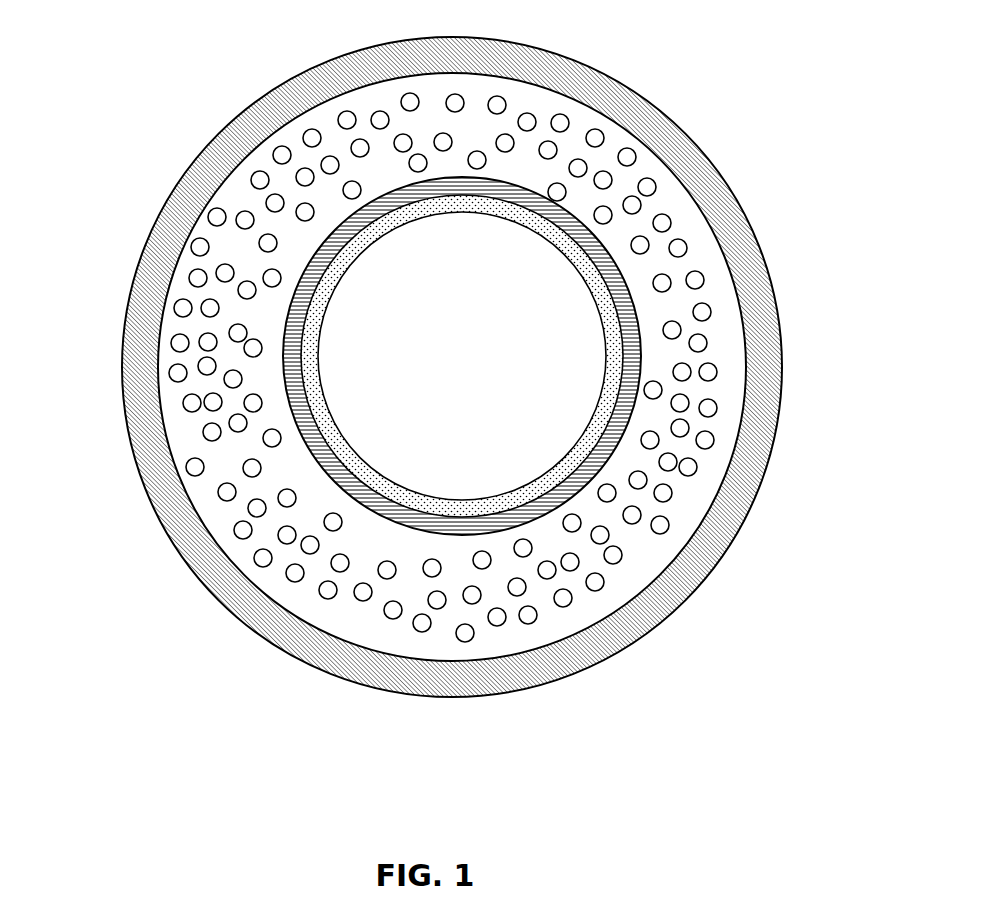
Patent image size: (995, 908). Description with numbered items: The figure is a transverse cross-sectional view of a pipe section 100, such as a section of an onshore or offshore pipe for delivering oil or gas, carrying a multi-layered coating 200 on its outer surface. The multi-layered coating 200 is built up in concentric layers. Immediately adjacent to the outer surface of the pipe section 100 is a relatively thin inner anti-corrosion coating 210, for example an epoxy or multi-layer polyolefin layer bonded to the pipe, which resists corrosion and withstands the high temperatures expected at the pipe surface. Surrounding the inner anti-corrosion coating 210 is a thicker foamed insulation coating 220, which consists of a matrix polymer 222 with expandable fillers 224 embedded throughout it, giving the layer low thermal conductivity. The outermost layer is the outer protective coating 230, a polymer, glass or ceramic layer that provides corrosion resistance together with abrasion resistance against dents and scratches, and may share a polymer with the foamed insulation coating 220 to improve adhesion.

The pipe section 100 is at (331, 310).
The inner anti-corrosion coating 210 is at (292, 340).
The multi-layered coating 200 is at (468, 409).
The foamed insulation coating 220 is at (468, 405).
The matrix polymer 222 is at (312, 602).
The expandable fillers 224 is at (243, 530).
The outer protective coating 230 is at (657, 127).